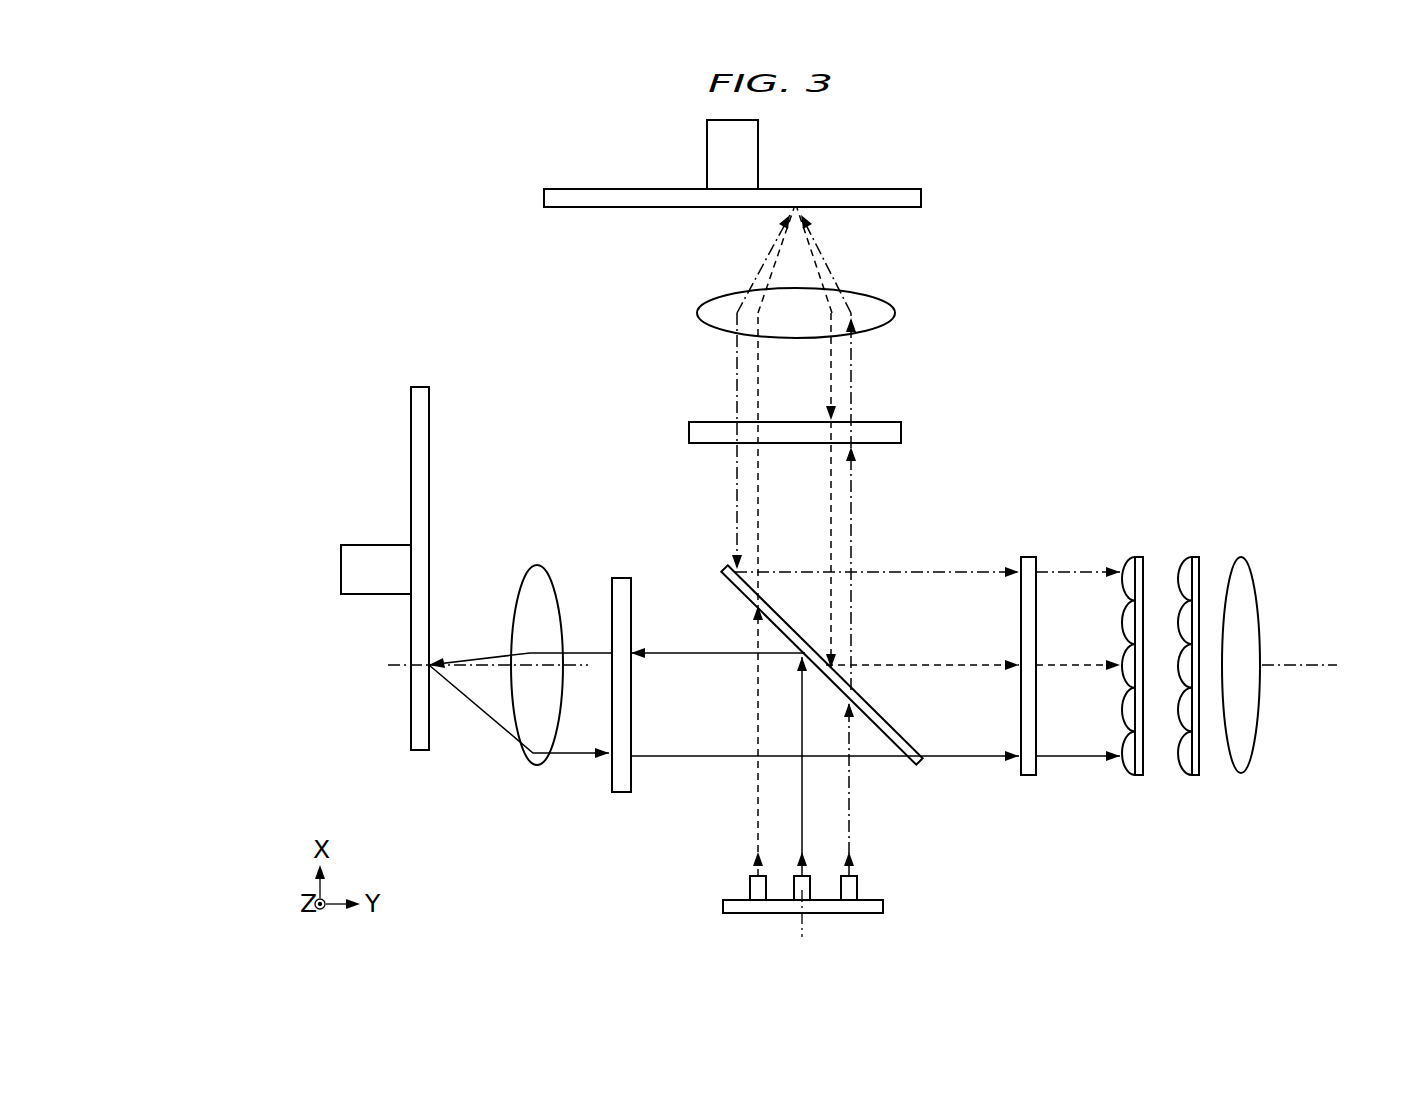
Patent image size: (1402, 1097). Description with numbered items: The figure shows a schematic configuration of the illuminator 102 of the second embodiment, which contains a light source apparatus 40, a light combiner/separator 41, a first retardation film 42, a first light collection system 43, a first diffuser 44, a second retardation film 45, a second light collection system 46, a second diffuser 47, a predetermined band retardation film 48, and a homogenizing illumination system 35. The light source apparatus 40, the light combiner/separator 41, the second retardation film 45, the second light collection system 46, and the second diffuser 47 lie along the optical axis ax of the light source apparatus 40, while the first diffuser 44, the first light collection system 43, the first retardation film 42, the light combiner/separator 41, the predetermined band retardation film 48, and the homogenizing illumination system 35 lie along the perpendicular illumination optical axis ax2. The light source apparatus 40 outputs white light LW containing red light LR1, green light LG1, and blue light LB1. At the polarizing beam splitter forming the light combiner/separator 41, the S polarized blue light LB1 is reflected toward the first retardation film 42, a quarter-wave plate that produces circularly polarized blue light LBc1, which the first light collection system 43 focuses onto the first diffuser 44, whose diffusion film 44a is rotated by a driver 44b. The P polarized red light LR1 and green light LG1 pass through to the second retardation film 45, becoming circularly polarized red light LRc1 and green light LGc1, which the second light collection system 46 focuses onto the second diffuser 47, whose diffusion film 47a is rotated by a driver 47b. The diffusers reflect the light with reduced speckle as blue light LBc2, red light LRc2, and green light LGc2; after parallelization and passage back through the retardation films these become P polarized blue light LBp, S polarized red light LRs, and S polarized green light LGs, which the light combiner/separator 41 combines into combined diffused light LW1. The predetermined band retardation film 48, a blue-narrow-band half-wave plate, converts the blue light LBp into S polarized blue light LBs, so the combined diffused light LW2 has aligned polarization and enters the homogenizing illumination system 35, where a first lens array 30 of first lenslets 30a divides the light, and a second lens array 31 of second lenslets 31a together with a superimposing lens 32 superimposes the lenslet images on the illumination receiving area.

The illuminator 102 is at (1160, 322).
The second diffuser 47 is at (458, 115).
The diffusion film 47a is at (548, 197).
The driver 47b is at (712, 143).
The second light collection system 46 is at (875, 312).
The second retardation film 45 is at (695, 433).
The first diffuser 44 is at (268, 587).
The diffusion film 44a is at (410, 685).
The driver 44b is at (346, 570).
The first light collection system 43 is at (540, 765).
The first retardation film 42 is at (616, 614).
The light combiner/separator 41 is at (915, 763).
The light source apparatus 40 is at (698, 894).
The predetermined band retardation film 48 is at (1032, 775).
The homogenizing illumination system 35 is at (1283, 460).
The first lens array 30 is at (1136, 550).
The second lens array 31 is at (1186, 550).
The superimposing lens 32 is at (1242, 558).
The first lenslets 30a is at (1125, 765).
The second lenslets 31a is at (1185, 768).
The optical axis ax is at (802, 930).
The illumination optical axis ax2 is at (1290, 688).
The S polarized red light LRs is at (737, 480).
The S polarized green light LGs is at (831, 489).
The S-polarized blue light LBs is at (1083, 765).
The P polarized blue light LBp is at (688, 754).
The blue light LB1 is at (677, 650).
The green light LG1 is at (758, 522).
The red light LR1 is at (851, 530).
The circularly polarized red light LRc1 is at (851, 391).
The red light LRc2 is at (737, 393).
The circularly polarized green light LGc1 is at (758, 357).
The green light LGc2 is at (832, 363).
The circularly polarized blue light LBc1 is at (483, 652).
The blue light LBc2 is at (470, 700).
The white light LW is at (657, 783).
The combined diffused light LW1 is at (1037, 862).
The combined diffused light LW2 is at (1137, 500).